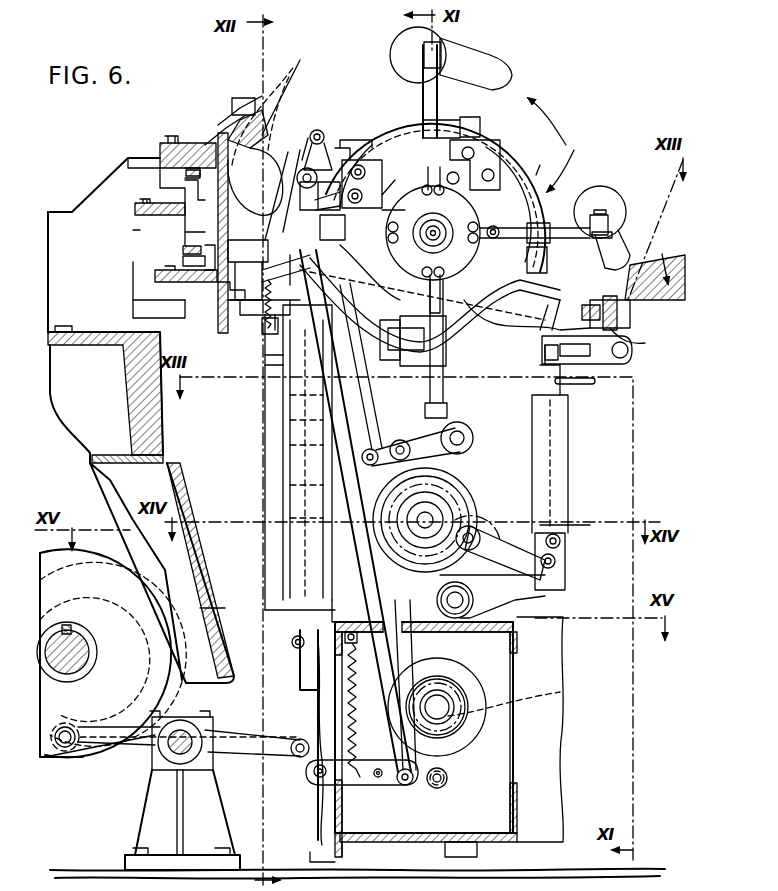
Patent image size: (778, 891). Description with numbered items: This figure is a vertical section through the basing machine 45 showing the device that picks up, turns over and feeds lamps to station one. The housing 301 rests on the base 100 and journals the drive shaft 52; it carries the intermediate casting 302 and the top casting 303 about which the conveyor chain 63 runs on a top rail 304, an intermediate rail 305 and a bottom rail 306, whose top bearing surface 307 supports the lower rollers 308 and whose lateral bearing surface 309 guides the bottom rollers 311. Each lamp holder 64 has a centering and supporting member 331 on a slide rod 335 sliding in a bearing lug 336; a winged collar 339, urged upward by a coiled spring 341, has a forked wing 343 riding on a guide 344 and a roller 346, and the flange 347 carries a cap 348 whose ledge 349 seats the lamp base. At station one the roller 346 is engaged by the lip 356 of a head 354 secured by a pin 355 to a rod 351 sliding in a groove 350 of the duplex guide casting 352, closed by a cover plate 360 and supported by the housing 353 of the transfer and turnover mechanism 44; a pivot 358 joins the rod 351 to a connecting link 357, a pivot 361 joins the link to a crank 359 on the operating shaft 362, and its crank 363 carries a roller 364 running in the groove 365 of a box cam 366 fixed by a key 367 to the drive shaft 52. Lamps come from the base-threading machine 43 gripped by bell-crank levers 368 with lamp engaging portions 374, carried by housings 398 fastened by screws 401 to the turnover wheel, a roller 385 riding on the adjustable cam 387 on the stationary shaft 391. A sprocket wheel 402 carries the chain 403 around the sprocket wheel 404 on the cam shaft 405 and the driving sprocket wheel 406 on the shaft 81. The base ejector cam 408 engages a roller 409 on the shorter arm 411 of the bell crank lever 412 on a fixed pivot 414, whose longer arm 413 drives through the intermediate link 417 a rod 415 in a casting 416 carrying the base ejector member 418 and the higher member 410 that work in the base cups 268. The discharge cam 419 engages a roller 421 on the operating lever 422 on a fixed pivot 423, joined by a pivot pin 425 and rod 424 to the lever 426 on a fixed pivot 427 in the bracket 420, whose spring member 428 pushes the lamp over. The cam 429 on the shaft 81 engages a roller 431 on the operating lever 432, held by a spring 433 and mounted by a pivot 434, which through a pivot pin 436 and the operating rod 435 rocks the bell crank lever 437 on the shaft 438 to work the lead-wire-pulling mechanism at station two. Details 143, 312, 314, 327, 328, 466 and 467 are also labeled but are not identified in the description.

The base-threading machine 43 is at (655, 265).
The transfer and turnover mechanism 44 is at (570, 162).
The basing machine 45 is at (105, 156).
The drive shaft 52 is at (80, 663).
The conveyor chain 63 is at (181, 250).
The lamp holder 64 is at (245, 114).
The shaft 81 is at (455, 718).
The base or foundation 100 is at (98, 870).
The hand lever knob 143 is at (612, 192).
The base receiving pockets or cups 268 is at (620, 323).
The housing 301 is at (188, 465).
The intermediate casting 302 is at (132, 410).
The top casting 303 is at (62, 212).
The top rail 304 is at (172, 145).
The intermediate rail 305 is at (133, 209).
The bottom rail 306 is at (120, 346).
The top bearing surface 307 is at (138, 269).
The lower rollers 308 is at (181, 261).
The lateral bearing surface 309 is at (172, 274).
The bottom rollers 311 is at (150, 301).
The sleeve 312 is at (150, 177).
The retainer 314 is at (183, 187).
The end plate 327 is at (215, 162).
The collar 328 is at (172, 236).
The centering and supporting member 331 is at (222, 291).
The slide rod 335 is at (262, 390).
The bearing lug 336 is at (370, 269).
The winged collar 339 is at (262, 338).
The coiled spring 341 is at (245, 320).
The wing 343 is at (240, 310).
The guide 344 is at (232, 298).
The roller 346 is at (262, 364).
The flange 347 is at (222, 130).
The cap 348 is at (243, 96).
The ledge 349 is at (268, 142).
The groove 350 is at (283, 570).
The rod 351 is at (267, 612).
The duplex guide casting 352 is at (283, 474).
The housing 353 is at (340, 600).
The head 354 is at (370, 282).
The pin 355 is at (292, 462).
The lip 356 is at (430, 303).
The connecting link 357 is at (298, 688).
The pivot 358 is at (290, 642).
The crank 359 is at (292, 742).
The cover plate 360 is at (280, 441).
The pivot 361 is at (300, 763).
The operating shaft 362 is at (205, 766).
The crank 363 is at (125, 755).
The roller 364 is at (65, 751).
The groove 365 is at (108, 703).
The box cam 366 is at (88, 765).
The key 367 is at (70, 628).
The bell-crank lever 368 is at (435, 94).
The lamp engaging portion 374 is at (630, 202).
The roller 385 is at (493, 226).
The adjustable cam 387 is at (412, 194).
The stationary supporting shaft 391 is at (440, 226).
The housing 398 is at (446, 202).
The screws 401 is at (472, 526).
The sprocket wheel 402 is at (548, 161).
The chain 403 is at (550, 302).
The sprocket wheel 404 is at (432, 504).
The cam shaft 405 is at (413, 562).
The sprocket wheel 406 is at (508, 700).
The base ejector cam 408 is at (378, 512).
The roller 409 is at (520, 517).
The member 410 is at (580, 387).
The shorter arm 411 is at (480, 547).
The bell crank lever 412 is at (540, 636).
The longer arm 413 is at (535, 598).
The fixed pivot 414 is at (458, 621).
The rod 415 is at (555, 407).
The casting 416 is at (570, 468).
The intermediate link 417 is at (562, 548).
The base ejector member 418 is at (631, 331).
The discharge cam 419 is at (380, 542).
The bracket 420 is at (405, 352).
The roller 421 is at (380, 453).
The operating lever 422 is at (465, 420).
The fixed pivot 423 is at (460, 430).
The rod 424 is at (358, 410).
The pivot pin 425 is at (362, 442).
The lever 426 is at (318, 216).
The fixed pivot 427 is at (261, 140).
The spring member 428 is at (298, 166).
The cam 429 is at (480, 735).
The roller 431 is at (442, 786).
The operating lever 432 is at (360, 786).
The spring 433 is at (360, 682).
The pivot 434 is at (318, 762).
The operating rod 435 is at (412, 686).
The pivot pin 436 is at (406, 786).
The bell crank lever 437 is at (355, 161).
The shaft 438 is at (318, 130).
The plate 466 is at (342, 141).
The block 467 is at (305, 152).